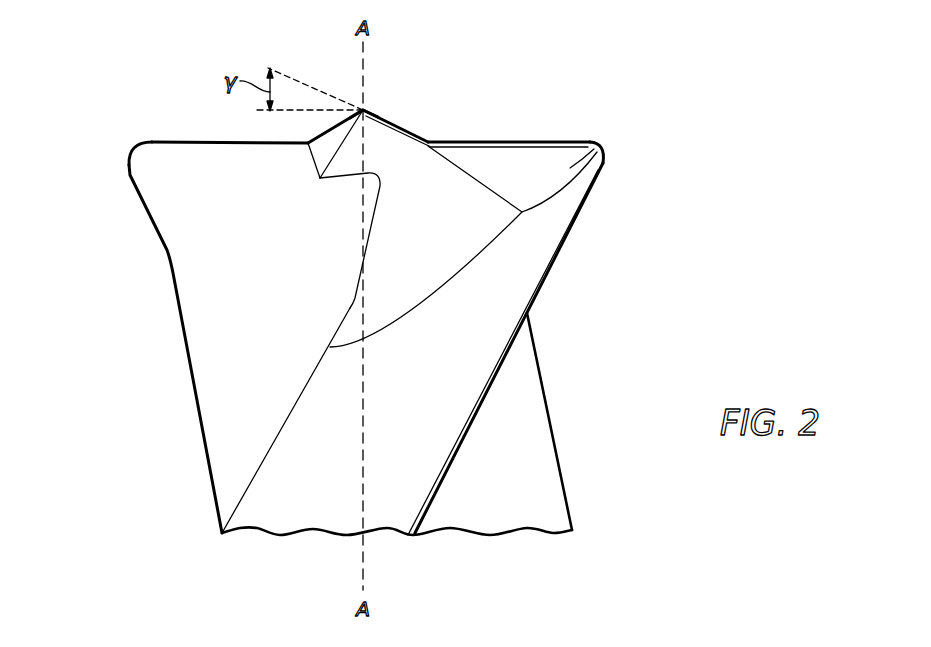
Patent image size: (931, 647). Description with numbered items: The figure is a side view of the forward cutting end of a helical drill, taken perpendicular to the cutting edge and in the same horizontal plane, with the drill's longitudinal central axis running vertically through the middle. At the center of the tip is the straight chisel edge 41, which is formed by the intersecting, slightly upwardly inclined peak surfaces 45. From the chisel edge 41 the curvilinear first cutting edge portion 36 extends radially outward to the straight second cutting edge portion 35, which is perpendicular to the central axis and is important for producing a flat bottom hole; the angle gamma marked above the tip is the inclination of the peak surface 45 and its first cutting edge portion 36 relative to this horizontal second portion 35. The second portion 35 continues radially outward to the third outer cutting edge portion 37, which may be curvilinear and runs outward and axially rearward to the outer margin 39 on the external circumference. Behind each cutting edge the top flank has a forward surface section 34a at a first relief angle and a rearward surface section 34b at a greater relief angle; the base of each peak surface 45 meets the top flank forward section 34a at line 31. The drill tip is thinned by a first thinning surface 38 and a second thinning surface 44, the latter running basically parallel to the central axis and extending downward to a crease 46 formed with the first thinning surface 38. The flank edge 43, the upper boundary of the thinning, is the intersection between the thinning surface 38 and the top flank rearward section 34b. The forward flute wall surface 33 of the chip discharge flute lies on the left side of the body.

The line 31 is at (443, 141).
The forward flute wall surface 33 is at (223, 280).
The top flank forward surface section 34a is at (573, 141).
The top flank rearward surface section 34b is at (603, 151).
The second cutting edge portion 35 is at (207, 140).
The first cutting edge portion 36 is at (322, 134).
The third outer cutting edge portion 37 is at (125, 153).
The first thinning surface 38 is at (397, 265).
The outer margin 39 is at (548, 278).
The chisel edge 41 is at (365, 107).
The flank edge 43 is at (486, 187).
The second thinning surface 44 is at (328, 148).
The peak surface 45 is at (417, 143).
The crease 46 is at (338, 151).